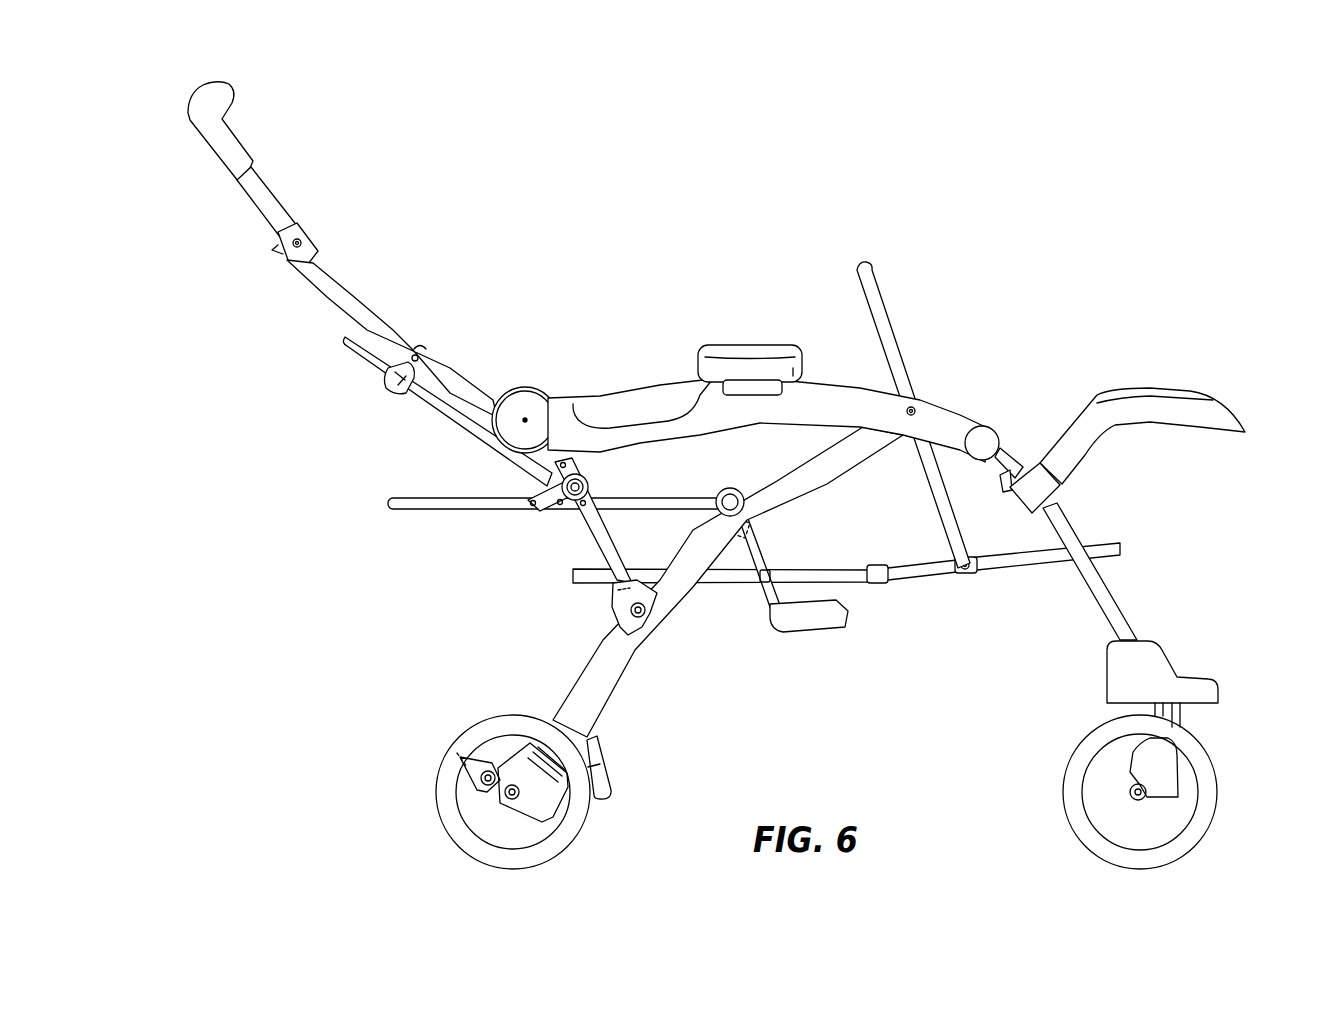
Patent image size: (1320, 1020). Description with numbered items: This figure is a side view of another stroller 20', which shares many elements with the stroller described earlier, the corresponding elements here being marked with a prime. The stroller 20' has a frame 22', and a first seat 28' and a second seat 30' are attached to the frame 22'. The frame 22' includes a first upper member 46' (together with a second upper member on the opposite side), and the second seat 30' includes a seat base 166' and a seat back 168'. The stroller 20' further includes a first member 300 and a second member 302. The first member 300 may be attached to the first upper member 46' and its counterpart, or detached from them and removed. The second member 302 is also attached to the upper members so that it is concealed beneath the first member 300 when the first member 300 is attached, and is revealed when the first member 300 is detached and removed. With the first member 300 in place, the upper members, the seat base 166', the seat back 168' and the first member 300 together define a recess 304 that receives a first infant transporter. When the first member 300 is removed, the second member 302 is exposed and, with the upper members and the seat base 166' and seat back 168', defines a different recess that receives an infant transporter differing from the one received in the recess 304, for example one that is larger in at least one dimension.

The stroller 20' is at (826, 531).
The frame 22' is at (1105, 554).
The first seat 28' is at (913, 415).
The second seat 30' is at (373, 267).
The first upper member 46' is at (728, 572).
The seat base 166' is at (566, 544).
The seat back 168' is at (447, 411).
The first member 300 is at (748, 350).
The second member 302 is at (807, 367).
The recess 304 is at (629, 372).